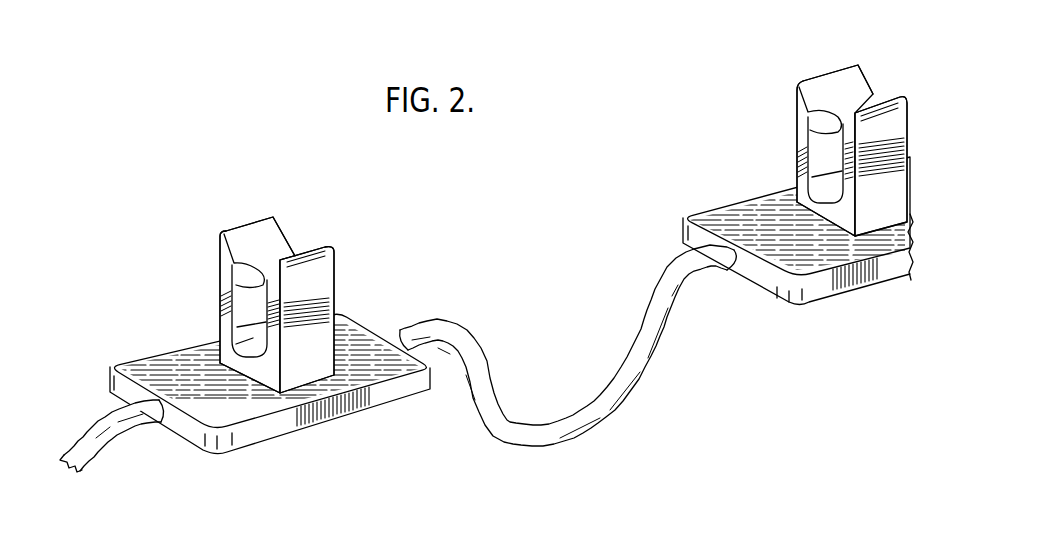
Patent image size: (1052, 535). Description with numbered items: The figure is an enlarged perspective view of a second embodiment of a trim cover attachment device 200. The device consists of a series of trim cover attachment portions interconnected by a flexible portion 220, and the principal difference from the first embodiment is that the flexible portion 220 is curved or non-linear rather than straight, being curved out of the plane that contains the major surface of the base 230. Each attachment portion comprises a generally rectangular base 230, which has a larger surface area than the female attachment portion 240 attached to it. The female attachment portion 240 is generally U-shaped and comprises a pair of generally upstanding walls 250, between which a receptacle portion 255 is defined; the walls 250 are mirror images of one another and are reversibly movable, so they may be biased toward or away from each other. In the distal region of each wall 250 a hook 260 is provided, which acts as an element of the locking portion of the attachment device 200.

The trim cover attachment device 200 is at (714, 418).
The flexible portion 220 is at (87, 463).
The base 230 is at (135, 363).
The female attachment portion 240 is at (516, 249).
The wall 250 is at (222, 306).
The receptacle portion 255 is at (247, 342).
The hook 260 is at (250, 284).